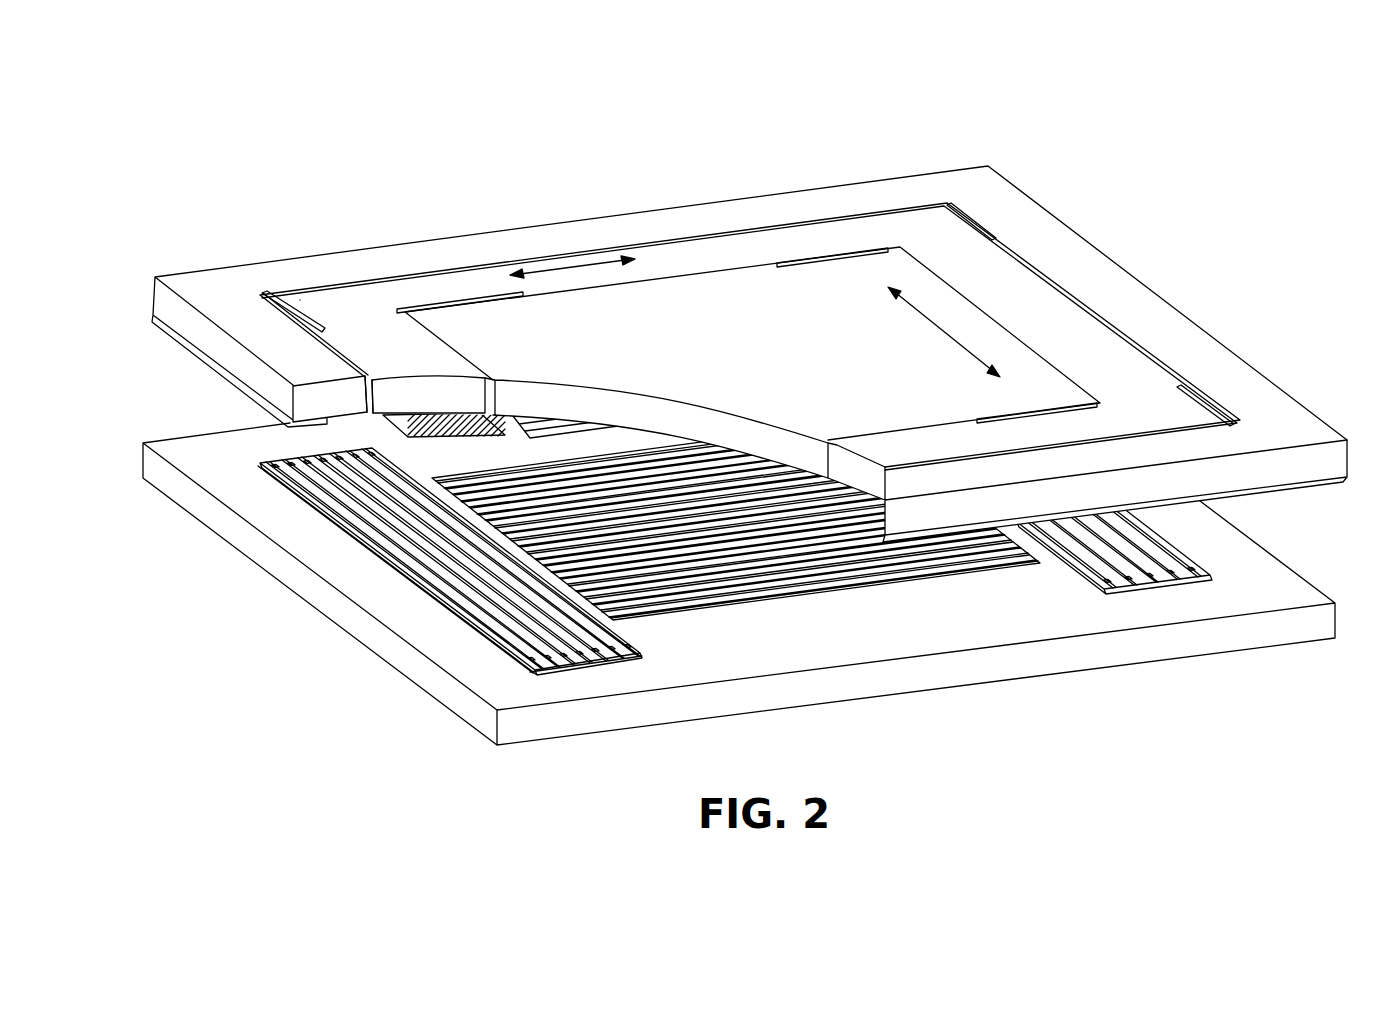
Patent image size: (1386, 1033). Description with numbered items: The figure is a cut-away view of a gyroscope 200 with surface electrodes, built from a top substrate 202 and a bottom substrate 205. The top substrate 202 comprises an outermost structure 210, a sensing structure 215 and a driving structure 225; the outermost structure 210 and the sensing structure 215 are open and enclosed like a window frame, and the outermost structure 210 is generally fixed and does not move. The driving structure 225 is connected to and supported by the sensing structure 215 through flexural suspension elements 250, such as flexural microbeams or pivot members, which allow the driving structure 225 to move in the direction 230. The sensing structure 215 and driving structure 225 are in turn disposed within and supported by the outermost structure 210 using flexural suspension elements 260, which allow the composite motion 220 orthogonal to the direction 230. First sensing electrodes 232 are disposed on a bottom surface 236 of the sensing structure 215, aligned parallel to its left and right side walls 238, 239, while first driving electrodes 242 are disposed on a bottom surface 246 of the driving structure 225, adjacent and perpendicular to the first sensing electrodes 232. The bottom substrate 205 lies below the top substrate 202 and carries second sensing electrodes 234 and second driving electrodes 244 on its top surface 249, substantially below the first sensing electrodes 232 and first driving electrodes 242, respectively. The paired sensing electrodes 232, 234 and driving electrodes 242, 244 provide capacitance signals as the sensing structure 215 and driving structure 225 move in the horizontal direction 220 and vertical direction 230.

The gyroscope 200 is at (1183, 150).
The top substrate 202 is at (1133, 273).
The bottom substrate 205 is at (441, 695).
The outermost structure 210 is at (1296, 433).
The sensing structure 215 is at (1057, 328).
The composite motion direction 220 is at (604, 262).
The driving structure 225 is at (749, 360).
The driving motion direction 230 is at (920, 314).
The first sensing electrodes 232 is at (423, 433).
The second sensing electrodes 234 is at (413, 547).
The bottom surface 236 is at (387, 416).
The left side wall 238 is at (373, 312).
The right side wall 239 is at (987, 283).
The first driving electrodes 242 is at (660, 443).
The second driving electrodes 244 is at (703, 587).
The bottom surface 246 is at (512, 420).
The top surface 249 is at (630, 667).
The flexural suspension elements 250 is at (466, 298).
The flexural suspension elements 260 is at (267, 297).